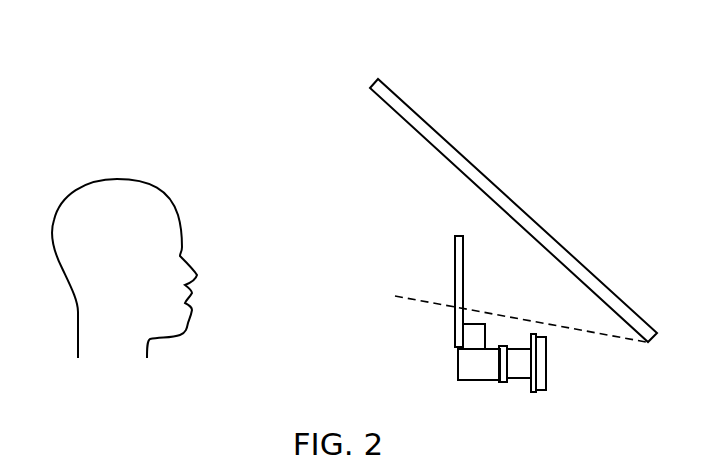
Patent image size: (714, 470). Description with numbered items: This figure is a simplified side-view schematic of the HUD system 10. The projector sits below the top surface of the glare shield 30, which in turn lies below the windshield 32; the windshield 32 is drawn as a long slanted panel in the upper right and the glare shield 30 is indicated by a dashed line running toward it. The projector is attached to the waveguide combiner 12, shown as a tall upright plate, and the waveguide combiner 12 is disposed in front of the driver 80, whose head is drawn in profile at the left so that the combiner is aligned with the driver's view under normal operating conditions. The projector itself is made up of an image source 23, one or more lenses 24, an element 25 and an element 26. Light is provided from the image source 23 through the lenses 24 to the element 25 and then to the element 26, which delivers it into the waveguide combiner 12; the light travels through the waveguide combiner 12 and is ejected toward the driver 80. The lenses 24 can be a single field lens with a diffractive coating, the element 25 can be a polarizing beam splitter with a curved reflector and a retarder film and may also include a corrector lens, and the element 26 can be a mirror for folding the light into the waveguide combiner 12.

The HUD system 10 is at (524, 58).
The waveguide combiner 12 is at (460, 256).
The image source 23 is at (540, 390).
The lenses 24 is at (520, 336).
The element 25 is at (476, 372).
The element 26 is at (475, 325).
The glare shield 30 is at (410, 296).
The windshield 32 is at (495, 193).
The driver 80 is at (121, 190).